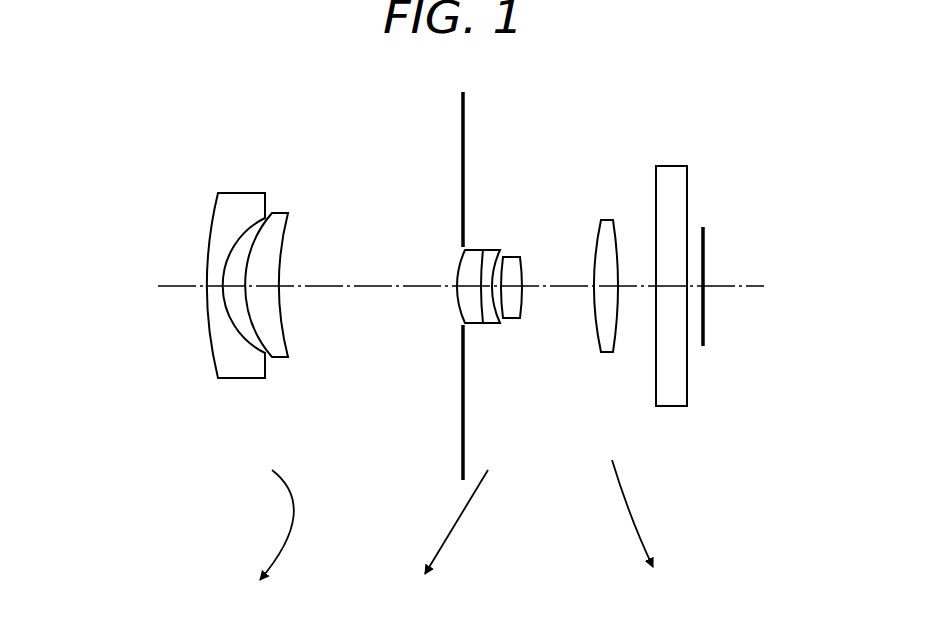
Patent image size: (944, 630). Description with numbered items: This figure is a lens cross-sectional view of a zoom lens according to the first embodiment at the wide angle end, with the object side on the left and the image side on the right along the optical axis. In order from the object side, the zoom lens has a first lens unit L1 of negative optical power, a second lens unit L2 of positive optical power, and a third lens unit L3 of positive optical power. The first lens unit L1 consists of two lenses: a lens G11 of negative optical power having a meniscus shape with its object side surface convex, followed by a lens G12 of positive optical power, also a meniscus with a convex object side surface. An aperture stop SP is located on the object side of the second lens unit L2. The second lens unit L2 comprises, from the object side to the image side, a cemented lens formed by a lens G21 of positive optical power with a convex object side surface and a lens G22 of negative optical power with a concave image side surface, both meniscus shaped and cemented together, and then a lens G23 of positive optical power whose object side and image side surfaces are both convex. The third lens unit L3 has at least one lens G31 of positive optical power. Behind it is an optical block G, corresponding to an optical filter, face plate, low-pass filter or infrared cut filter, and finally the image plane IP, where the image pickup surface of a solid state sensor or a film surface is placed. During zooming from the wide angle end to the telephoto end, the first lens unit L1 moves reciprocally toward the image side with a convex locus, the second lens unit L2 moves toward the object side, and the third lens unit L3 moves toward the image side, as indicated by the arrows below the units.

The first lens unit L1 is at (336, 131).
The lens of negative optical power G11 is at (243, 198).
The lens of positive optical power G12 is at (277, 215).
The aperture stop SP is at (464, 113).
The second lens unit L2 is at (551, 191).
The lens of positive optical power G21 is at (462, 257).
The lens of negative optical power G22 is at (491, 252).
The lens of positive optical power G23 is at (515, 257).
The third lens unit L3 is at (636, 166).
The lens of positive optical power G31 is at (606, 220).
The optical block G is at (674, 165).
The image plane IP is at (704, 235).